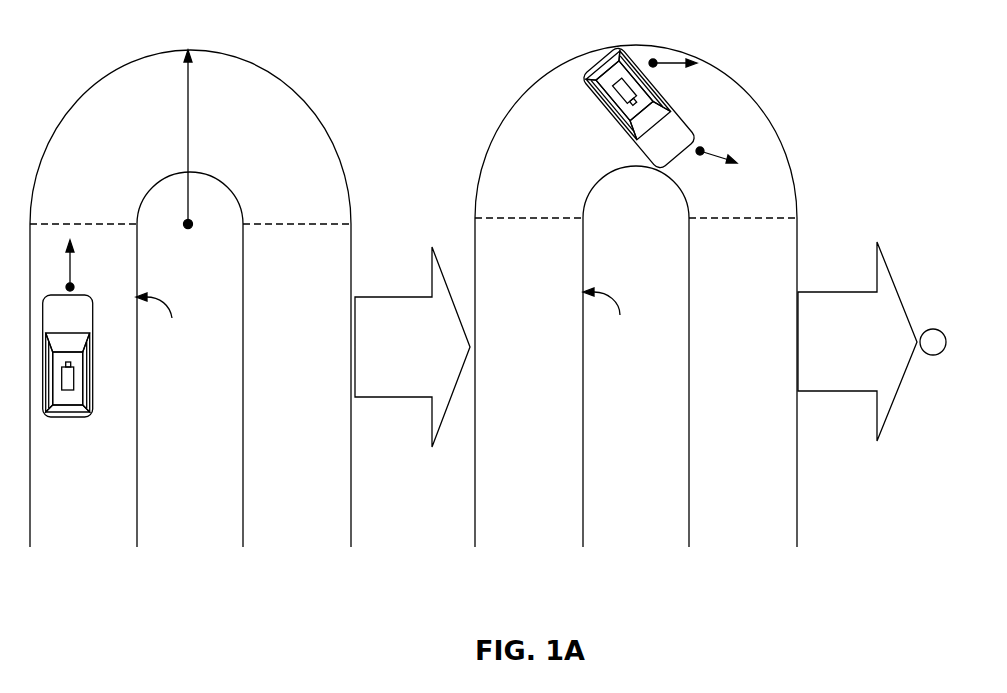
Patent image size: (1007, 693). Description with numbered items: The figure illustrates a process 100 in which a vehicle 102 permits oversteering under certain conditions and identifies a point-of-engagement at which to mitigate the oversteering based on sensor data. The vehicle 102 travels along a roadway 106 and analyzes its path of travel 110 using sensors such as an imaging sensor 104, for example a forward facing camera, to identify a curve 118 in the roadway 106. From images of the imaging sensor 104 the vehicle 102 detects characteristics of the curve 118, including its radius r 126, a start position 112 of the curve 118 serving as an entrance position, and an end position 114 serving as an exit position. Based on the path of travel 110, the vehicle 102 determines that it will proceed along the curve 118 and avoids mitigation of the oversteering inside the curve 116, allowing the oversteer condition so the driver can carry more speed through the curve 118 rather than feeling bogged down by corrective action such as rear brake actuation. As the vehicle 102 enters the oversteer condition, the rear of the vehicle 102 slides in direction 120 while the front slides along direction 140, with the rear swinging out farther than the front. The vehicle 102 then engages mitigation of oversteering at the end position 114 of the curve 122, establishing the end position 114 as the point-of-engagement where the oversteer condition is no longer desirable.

The process 100 is at (92, 27).
The vehicle 102 is at (93, 408).
The imaging sensor 104 is at (75, 378).
The roadway 106 is at (384, 315).
The path of travel 110 is at (73, 283).
The start position 112 is at (413, 356).
The end position 114 is at (437, 381).
The avoidance of mitigation of oversteering inside the curve 116 is at (382, 297).
The curve 118 is at (268, 72).
The direction 120 is at (683, 60).
The engagement of mitigation of oversteering at end of curve 122 is at (830, 292).
The radius r 126 is at (192, 52).
The direction 140 is at (708, 150).